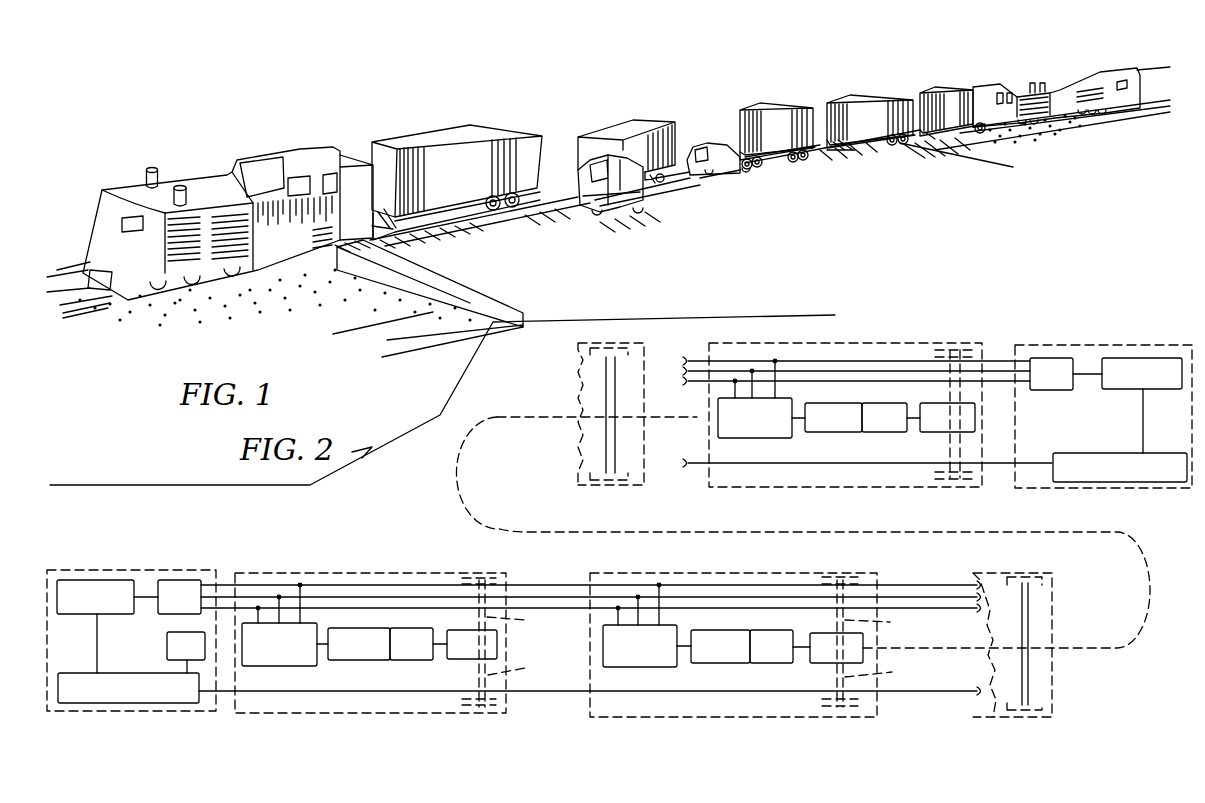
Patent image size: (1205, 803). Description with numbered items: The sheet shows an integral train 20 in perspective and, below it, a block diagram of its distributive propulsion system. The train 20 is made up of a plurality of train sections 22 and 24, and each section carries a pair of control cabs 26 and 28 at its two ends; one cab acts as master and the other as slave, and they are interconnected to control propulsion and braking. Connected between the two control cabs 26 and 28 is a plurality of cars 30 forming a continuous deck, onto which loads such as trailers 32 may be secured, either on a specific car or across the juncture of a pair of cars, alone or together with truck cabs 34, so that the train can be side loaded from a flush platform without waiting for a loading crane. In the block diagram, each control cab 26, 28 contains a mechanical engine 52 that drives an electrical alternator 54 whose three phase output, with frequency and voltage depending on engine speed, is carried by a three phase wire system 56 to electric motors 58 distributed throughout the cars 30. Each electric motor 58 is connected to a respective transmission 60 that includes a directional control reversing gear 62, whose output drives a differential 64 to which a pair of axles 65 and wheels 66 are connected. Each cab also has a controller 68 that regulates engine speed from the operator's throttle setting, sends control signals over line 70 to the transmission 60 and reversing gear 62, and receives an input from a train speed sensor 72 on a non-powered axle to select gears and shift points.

In FIG. 1, the train 20 is at (745, 242).
In FIG. 1, the train section 22 is at (428, 96).
In FIG. 1, the train section 24 is at (1062, 137).
In FIG. 1, the control cab 26 is at (287, 153).
In FIG. 2, the control cab 26 is at (136, 570).
In FIG. 1, the control cab 28 is at (995, 87).
In FIG. 2, the control cab 28 is at (1092, 345).
In FIG. 1, the car 30 is at (532, 207).
In FIG. 2, the car 30 is at (640, 487).
In FIG. 1, the trailer 32 is at (395, 132).
In FIG. 1, the truck cab 34 is at (707, 132).
In FIG. 2, the mechanical engine 52 is at (1130, 391).
In FIG. 2, the electrical alternator 54 is at (1055, 391).
In FIG. 2, the three phase wire system 56 is at (1000, 357).
In FIG. 2, the electric motor 58 is at (760, 438).
In FIG. 2, the transmission 60 is at (832, 433).
In FIG. 2, the directional control reversing gear 62 is at (878, 433).
In FIG. 2, the differential 64 is at (940, 433).
In FIG. 2, the axle 65 is at (699, 645).
In FIG. 2, the wheel 66 is at (965, 478).
In FIG. 2, the controller 68 is at (1120, 482).
In FIG. 2, the line 70 is at (1000, 465).
In FIG. 2, the train speed sensor 72 is at (167, 645).